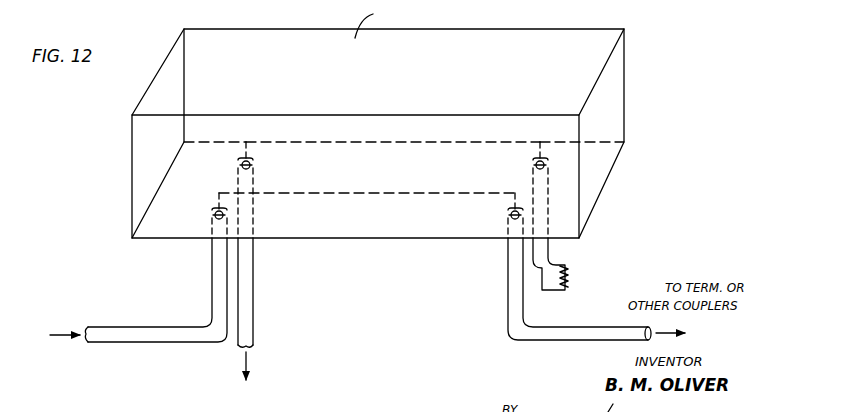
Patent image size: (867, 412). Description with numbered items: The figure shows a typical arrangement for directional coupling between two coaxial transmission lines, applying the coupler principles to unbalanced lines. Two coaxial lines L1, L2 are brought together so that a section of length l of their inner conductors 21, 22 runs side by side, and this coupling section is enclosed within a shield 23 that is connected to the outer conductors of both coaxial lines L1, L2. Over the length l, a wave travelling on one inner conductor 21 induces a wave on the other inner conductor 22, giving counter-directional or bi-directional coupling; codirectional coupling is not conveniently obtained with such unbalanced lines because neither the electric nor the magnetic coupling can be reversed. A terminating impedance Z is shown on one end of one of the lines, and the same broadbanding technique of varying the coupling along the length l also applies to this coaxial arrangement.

The shield 23 is at (257, 40).
The inner conductor 22 is at (329, 139).
The inner conductor 21 is at (427, 196).
The coaxial line L1 is at (211, 268).
The coaxial line L2 is at (254, 278).
The terminating impedance Z is at (560, 224).
The length of coupling section l is at (378, 272).